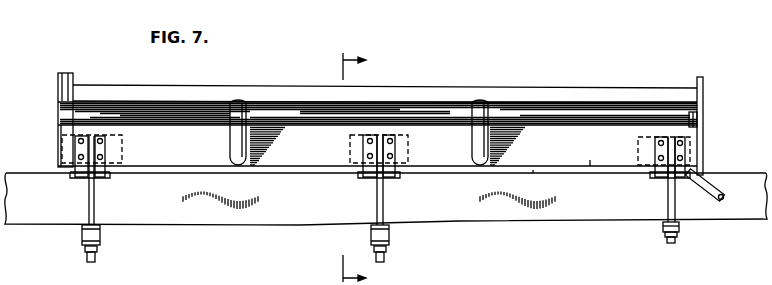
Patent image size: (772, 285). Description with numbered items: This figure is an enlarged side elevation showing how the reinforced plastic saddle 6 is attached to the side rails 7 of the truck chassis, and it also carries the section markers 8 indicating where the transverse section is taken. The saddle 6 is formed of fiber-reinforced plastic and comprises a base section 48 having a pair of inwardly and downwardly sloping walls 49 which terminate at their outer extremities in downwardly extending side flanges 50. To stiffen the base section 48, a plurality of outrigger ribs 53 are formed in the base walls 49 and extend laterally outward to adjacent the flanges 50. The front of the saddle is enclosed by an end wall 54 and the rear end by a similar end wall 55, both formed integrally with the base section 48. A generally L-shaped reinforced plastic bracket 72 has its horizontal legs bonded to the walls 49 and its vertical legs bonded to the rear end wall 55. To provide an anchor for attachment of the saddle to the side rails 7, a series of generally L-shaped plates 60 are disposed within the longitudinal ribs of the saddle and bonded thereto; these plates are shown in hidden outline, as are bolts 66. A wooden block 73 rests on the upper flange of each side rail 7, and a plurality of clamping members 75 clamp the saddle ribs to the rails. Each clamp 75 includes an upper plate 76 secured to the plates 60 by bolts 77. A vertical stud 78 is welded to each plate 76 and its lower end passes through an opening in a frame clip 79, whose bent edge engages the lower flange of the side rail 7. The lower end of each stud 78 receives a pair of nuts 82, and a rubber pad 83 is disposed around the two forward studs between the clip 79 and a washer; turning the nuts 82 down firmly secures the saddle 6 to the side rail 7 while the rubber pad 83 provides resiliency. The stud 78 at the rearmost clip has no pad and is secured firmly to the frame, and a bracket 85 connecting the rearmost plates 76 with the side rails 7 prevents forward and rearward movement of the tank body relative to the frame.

The reinforced plastic saddle 6 is at (610, 86).
The side rails 7 is at (278, 222).
The section line 8- 8 is at (342, 166).
The base section 48 is at (588, 158).
The sloping walls 49 is at (537, 105).
The side flanges 50 is at (418, 88).
The outrigger ribs 53 is at (230, 150).
The front end wall 54 is at (58, 113).
The rear end wall 55 is at (703, 86).
The L-shaped plates 60 is at (350, 148).
The bolts 66 is at (122, 148).
The L-shaped reinforced plastic bracket 72 is at (697, 122).
The wooden block 73 is at (533, 170).
The clamping members 75 is at (375, 177).
The upper plate 76 is at (78, 176).
The bolts 77 is at (78, 157).
The vertical stud 78 is at (94, 205).
The frame clip 79 is at (82, 230).
The nuts 82 is at (85, 256).
The rubber pad 83 is at (392, 250).
The bracket 85 is at (712, 182).